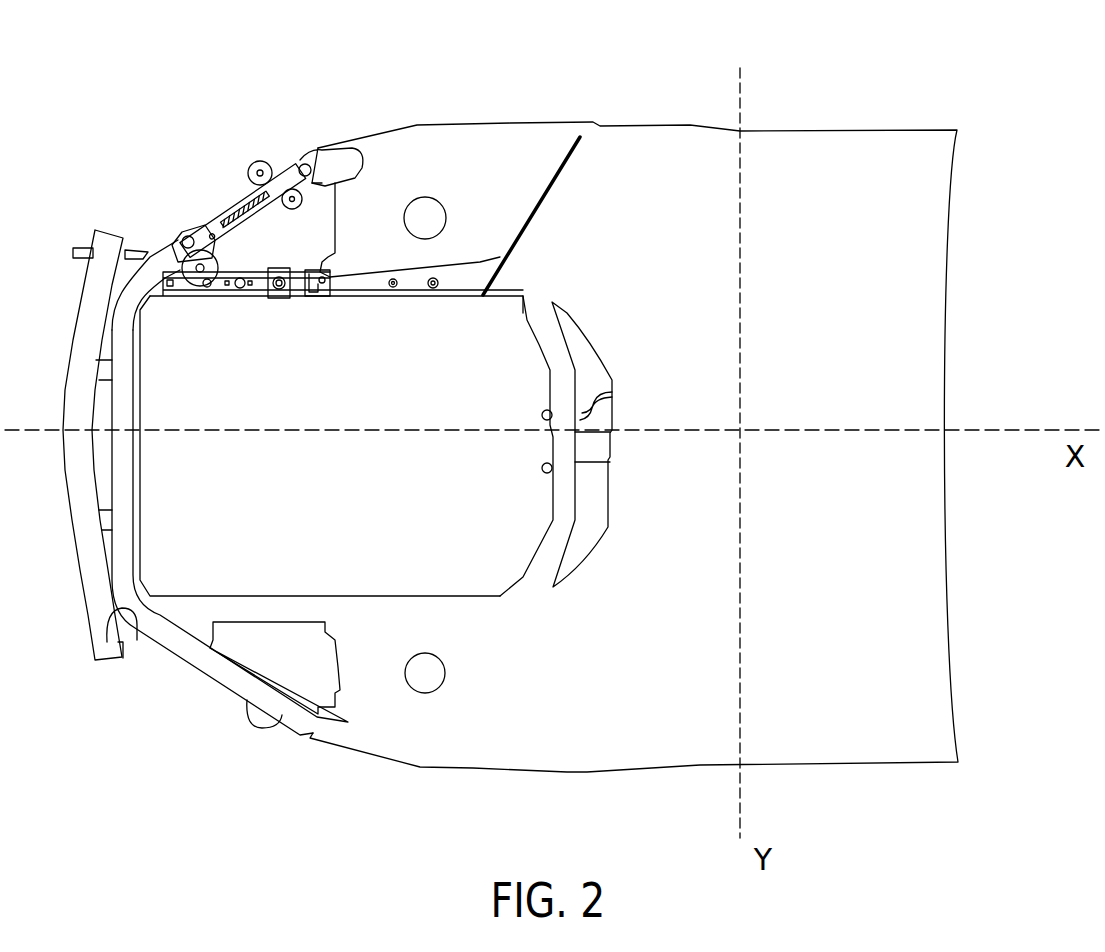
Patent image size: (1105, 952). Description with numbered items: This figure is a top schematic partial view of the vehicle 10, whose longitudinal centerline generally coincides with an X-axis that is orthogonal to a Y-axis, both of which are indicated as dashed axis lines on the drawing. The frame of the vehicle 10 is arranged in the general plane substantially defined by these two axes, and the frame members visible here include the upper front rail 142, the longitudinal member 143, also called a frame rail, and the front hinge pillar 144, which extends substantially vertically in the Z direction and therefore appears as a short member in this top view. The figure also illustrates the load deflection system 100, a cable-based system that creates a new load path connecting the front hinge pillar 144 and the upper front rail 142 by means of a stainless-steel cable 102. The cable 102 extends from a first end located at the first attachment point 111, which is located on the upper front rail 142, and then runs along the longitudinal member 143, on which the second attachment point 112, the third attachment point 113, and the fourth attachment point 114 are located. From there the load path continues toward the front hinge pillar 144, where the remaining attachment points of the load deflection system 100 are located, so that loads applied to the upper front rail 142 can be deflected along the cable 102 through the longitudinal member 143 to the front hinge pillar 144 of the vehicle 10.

The vehicle 10 is at (807, 95).
The load deflection system 100 is at (247, 147).
The cable 102 is at (237, 205).
The first attachment point 111 is at (303, 163).
The second attachment point 112 is at (193, 272).
The third attachment point 113 is at (388, 286).
The fourth attachment point 114 is at (490, 286).
The upper front rail 142 is at (188, 238).
The longitudinal member 143 is at (290, 293).
The front hinge pillar 144 is at (575, 150).